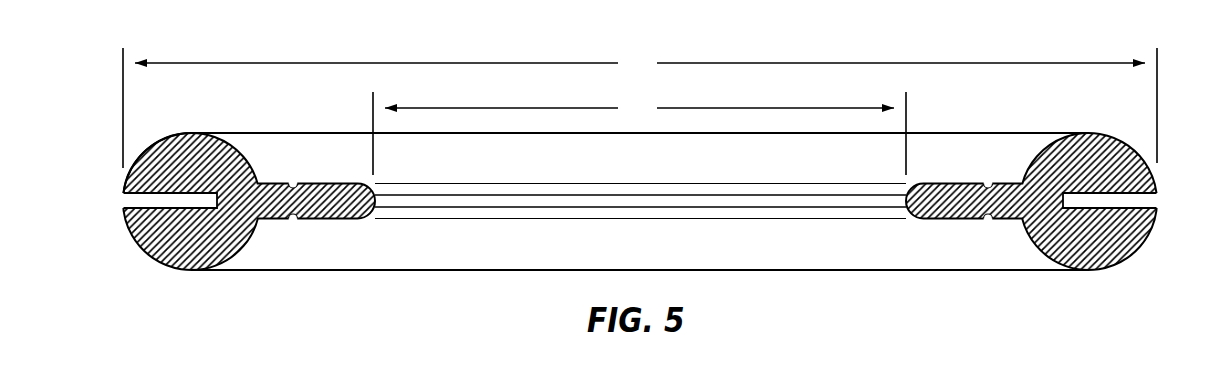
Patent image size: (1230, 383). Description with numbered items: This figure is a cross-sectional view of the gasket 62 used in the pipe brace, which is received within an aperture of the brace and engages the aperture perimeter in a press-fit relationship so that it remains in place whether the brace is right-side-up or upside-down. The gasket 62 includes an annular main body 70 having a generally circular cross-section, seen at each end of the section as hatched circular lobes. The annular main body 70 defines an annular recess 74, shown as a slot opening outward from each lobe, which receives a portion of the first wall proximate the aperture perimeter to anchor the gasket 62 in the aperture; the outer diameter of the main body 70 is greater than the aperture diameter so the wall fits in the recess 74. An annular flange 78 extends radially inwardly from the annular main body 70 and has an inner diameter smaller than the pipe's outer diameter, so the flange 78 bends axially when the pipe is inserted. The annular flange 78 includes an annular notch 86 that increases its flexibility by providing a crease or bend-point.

The gasket 62 is at (96, 101).
The annular main body 70 is at (126, 172).
The annular recess 74 is at (124, 201).
The annular flange 78 is at (335, 221).
The annular notch 86 is at (294, 221).